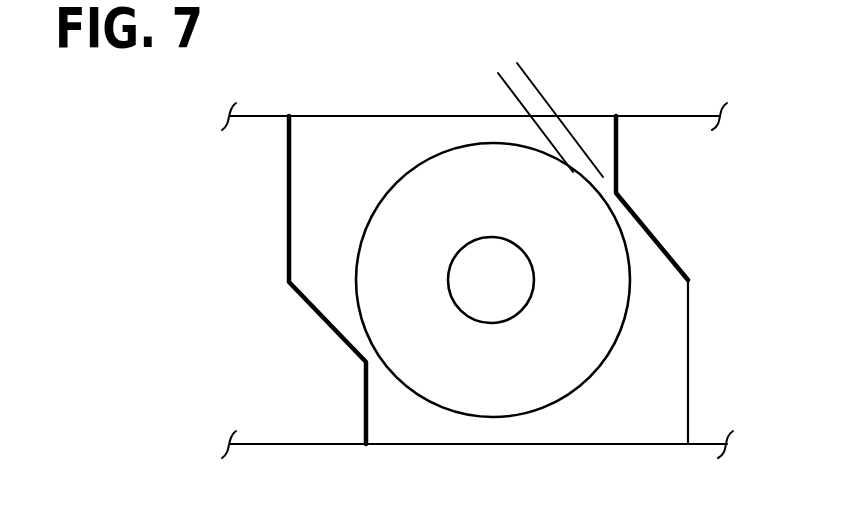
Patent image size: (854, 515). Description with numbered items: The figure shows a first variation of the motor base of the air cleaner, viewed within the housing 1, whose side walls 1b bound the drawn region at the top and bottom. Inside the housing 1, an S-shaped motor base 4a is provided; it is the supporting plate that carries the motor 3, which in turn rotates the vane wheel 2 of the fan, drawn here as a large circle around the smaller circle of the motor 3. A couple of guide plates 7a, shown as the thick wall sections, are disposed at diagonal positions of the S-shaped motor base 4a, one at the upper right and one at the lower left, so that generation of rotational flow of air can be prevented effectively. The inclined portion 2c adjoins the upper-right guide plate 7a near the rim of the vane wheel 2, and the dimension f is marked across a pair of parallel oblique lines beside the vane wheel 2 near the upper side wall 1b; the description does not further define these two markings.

The housing 1 is at (678, 116).
The side wall 1b is at (716, 116).
The vane wheel 2 is at (432, 185).
The inclined wall portion 2c is at (627, 282).
The motor 3 is at (491, 323).
The S-shaped motor base 4a is at (638, 422).
The guide plate 7a is at (618, 130).
The gap width f is at (467, 110).